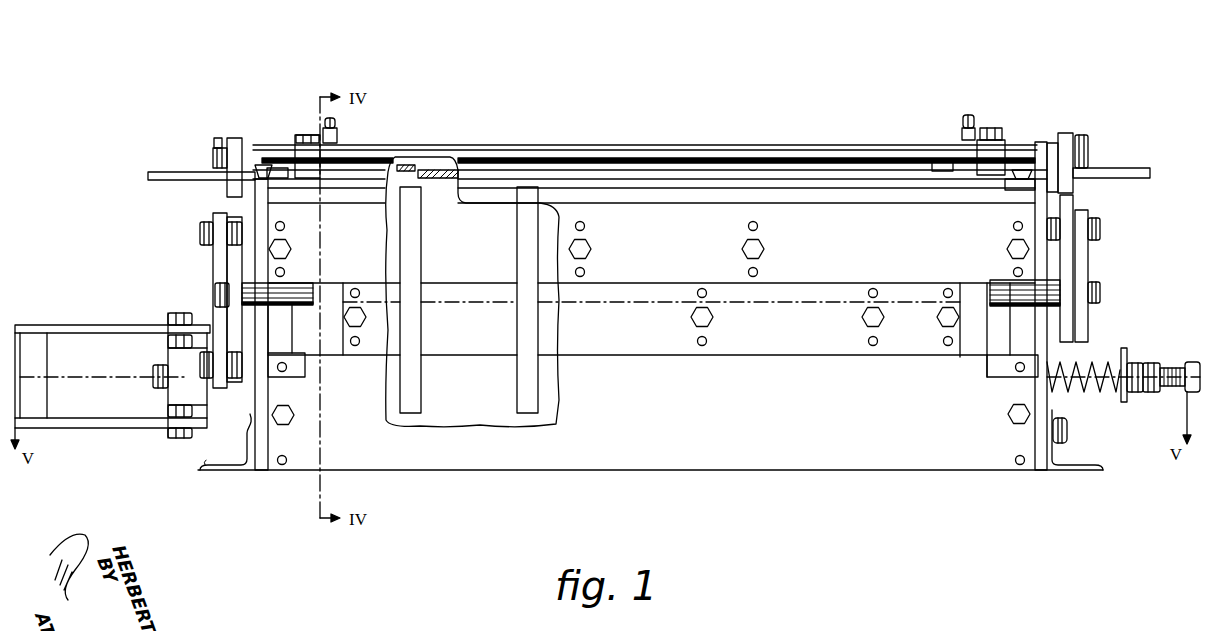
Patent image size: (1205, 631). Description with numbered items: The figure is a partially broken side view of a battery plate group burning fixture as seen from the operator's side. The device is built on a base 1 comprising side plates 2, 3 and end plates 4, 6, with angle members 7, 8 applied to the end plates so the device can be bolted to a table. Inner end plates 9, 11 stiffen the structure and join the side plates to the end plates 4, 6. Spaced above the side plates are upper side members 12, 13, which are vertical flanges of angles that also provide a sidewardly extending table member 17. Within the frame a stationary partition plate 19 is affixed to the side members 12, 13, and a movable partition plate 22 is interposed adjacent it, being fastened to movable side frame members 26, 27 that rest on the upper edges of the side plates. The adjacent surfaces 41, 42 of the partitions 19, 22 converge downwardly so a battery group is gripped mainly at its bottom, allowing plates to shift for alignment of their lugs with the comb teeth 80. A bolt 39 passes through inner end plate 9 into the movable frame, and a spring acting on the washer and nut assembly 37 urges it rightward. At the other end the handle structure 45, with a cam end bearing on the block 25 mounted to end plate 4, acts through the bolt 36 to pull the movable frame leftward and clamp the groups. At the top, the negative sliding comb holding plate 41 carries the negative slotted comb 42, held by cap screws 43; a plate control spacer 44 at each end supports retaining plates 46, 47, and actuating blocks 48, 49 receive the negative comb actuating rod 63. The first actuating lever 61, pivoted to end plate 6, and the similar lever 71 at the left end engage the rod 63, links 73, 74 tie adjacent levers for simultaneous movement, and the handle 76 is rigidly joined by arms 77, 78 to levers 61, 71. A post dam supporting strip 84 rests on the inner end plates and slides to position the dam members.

The base 1 is at (699, 472).
The side plate 2 is at (853, 455).
The side plate 3 is at (491, 396).
The end plate 4 is at (262, 212).
The end plate 6 is at (1044, 398).
The angle member 7 is at (1072, 462).
The angle member 8 is at (240, 461).
The inner end plate 9 is at (1028, 333).
The inner end plate 11 is at (275, 328).
The side member 12 is at (1028, 214).
The side member 13 is at (504, 252).
The table member 17 is at (776, 198).
The stationary partition plate 19 is at (410, 241).
The movable partition plate 22 is at (529, 241).
The block 25 is at (214, 422).
The movable side frame member 26 is at (806, 314).
The movable side frame member 27 is at (513, 327).
The bolt 36 is at (156, 390).
The washer and nut assembly 37 is at (1124, 392).
The bolt 39 is at (1193, 364).
The negative sliding comb holding plate 41 is at (892, 184).
The negative slotted comb 42 is at (823, 176).
The cap screw 43 is at (933, 160).
The plate control spacer 44 is at (263, 175).
The handle structure 45 is at (96, 433).
The retaining plate 46 is at (1019, 182).
The retaining plate 47 is at (283, 160).
The actuating block 48 is at (995, 145).
The actuating block 49 is at (310, 147).
The first actuating lever 61 is at (1053, 182).
The negative comb actuating rod 63 is at (620, 153).
The actuating lever 71 is at (247, 188).
The link 73 is at (1082, 252).
The link 74 is at (216, 254).
The handle 76 is at (1053, 287).
The arm 77 is at (1068, 305).
The arm 78 is at (567, 166).
The comb teeth 80 is at (440, 183).
The post dam supporting strip 84 is at (1118, 172).